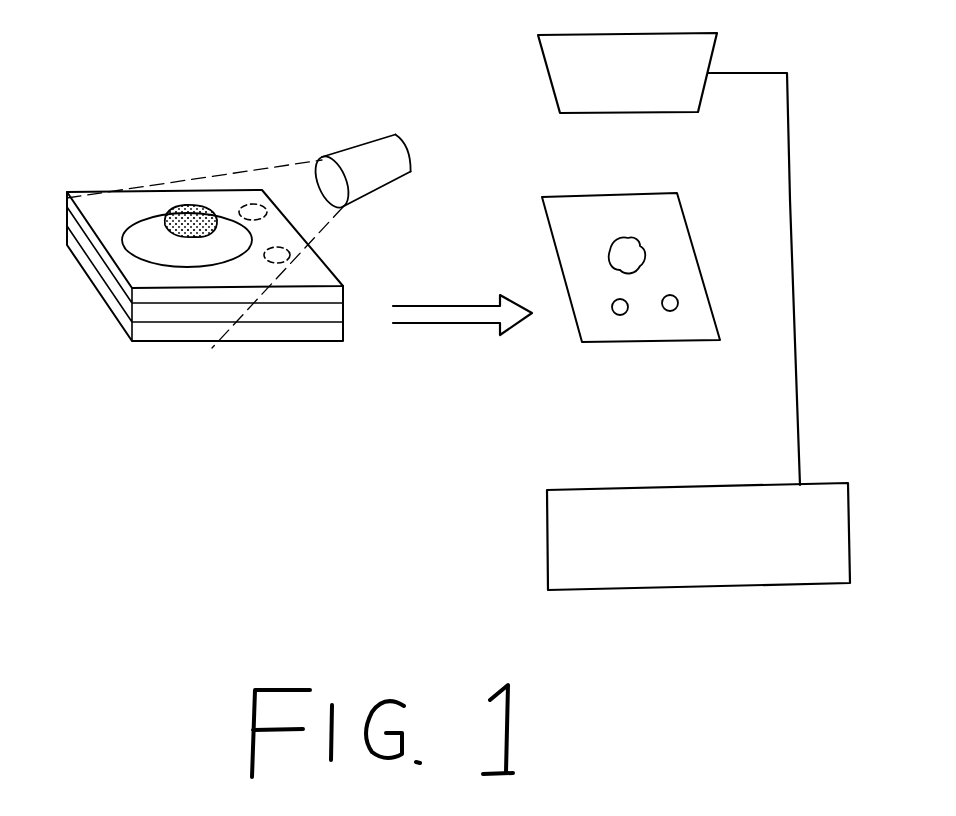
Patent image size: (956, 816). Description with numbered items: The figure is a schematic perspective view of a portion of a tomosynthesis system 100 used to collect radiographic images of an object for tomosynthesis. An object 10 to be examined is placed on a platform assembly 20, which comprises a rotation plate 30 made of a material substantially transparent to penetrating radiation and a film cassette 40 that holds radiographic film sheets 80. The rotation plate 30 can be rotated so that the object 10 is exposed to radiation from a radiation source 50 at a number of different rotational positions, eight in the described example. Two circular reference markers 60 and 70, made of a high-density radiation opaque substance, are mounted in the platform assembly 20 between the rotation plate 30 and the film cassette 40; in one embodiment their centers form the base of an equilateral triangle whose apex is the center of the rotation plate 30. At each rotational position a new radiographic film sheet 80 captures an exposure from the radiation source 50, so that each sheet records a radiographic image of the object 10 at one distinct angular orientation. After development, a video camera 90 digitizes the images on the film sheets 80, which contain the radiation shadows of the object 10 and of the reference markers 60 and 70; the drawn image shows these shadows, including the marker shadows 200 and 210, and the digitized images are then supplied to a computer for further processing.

The object 10 is at (201, 218).
The platform assembly 20 is at (125, 148).
The rotation plate 30 is at (132, 238).
The film cassette 40 is at (158, 313).
The radiation source 50 is at (353, 158).
The circular reference marker 60 is at (286, 256).
The circular reference marker 70 is at (250, 212).
The radiographic film sheet 80 is at (638, 217).
The video camera 90 is at (545, 64).
The tomosynthesis system 100 is at (645, 487).
The image of reference spot 200 is at (612, 306).
The image of reference spot 210 is at (672, 312).